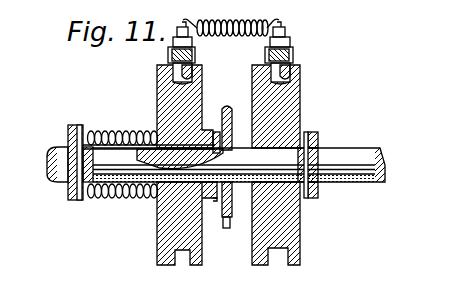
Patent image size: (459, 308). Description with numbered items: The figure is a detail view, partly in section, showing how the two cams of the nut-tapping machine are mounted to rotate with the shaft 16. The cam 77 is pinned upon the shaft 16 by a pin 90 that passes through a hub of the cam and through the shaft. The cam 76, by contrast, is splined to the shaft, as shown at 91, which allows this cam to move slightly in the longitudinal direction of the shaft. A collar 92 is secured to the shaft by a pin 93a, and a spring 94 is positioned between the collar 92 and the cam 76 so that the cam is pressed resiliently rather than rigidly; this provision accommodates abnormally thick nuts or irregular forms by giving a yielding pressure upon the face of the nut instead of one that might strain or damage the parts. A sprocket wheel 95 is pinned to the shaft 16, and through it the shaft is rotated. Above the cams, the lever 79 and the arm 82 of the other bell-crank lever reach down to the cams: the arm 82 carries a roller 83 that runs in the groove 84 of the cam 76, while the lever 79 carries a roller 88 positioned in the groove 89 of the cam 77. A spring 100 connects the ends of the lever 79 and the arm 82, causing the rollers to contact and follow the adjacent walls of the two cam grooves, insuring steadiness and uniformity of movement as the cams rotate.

The shaft 16 is at (352, 160).
The cam 76 is at (158, 94).
The cam 77 is at (300, 101).
The lever 79 is at (292, 62).
The arm 82 is at (196, 60).
The roller 83 is at (172, 70).
The groove 84 is at (197, 84).
The roller 88 is at (291, 67).
The groove 89 is at (300, 80).
The pin 90 is at (310, 141).
The spline 91 is at (167, 143).
The collar 92 is at (68, 137).
The pin 93a is at (81, 128).
The spring 94 is at (103, 200).
The sprocket wheel 95 is at (227, 230).
The spring 100 is at (224, 25).